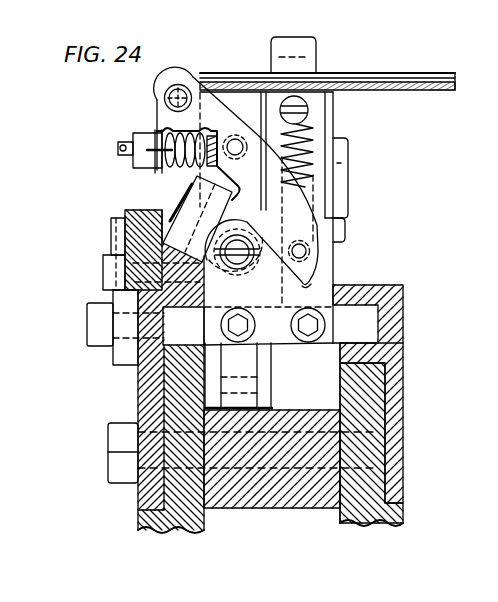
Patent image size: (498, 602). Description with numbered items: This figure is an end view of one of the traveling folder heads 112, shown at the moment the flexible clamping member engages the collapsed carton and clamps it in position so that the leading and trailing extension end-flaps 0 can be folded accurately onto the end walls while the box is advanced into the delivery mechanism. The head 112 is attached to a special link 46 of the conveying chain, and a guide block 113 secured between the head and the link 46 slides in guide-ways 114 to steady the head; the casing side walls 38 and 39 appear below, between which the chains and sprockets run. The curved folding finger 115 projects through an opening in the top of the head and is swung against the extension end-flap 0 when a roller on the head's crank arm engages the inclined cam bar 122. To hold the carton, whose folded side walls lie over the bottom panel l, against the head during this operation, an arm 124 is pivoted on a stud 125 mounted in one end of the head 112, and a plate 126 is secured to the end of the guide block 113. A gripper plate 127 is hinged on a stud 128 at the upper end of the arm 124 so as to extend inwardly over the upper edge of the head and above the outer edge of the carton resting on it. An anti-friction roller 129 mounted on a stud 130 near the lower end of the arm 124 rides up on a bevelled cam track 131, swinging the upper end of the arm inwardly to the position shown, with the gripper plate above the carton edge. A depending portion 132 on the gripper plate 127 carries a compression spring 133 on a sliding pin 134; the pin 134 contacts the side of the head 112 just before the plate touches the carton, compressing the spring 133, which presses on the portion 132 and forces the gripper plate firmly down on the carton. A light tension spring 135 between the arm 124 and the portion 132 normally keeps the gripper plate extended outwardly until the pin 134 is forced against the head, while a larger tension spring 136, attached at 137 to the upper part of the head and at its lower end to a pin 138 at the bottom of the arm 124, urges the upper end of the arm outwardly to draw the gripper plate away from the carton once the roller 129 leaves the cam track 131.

The gripper plate 127 is at (237, 80).
The extension end-flap 0 is at (403, 73).
The bottom panel l is at (430, 87).
The curved finger 115 is at (287, 50).
The folder head 112 is at (327, 107).
The arm 124 is at (305, 193).
The stud 128 is at (172, 98).
The depending portion 132 is at (160, 131).
The compression spring 133 is at (147, 162).
The sliding pin 134 is at (117, 145).
The light tension spring 135 is at (253, 161).
The anti-friction roller 129 is at (188, 193).
The inclined cam bar 122 is at (143, 223).
The stud 130 is at (157, 206).
The bevelled cam track 131 is at (197, 267).
The stud 125 is at (238, 262).
The pin 138 is at (309, 255).
The plate 126 is at (306, 287).
The guide-ways 114 is at (158, 338).
The guide block 113 is at (367, 326).
The special link 46 is at (270, 387).
The side wall 38 is at (145, 527).
The side wall 39 is at (365, 523).
The attachment point 137 is at (308, 115).
The larger tension spring 136 is at (308, 143).